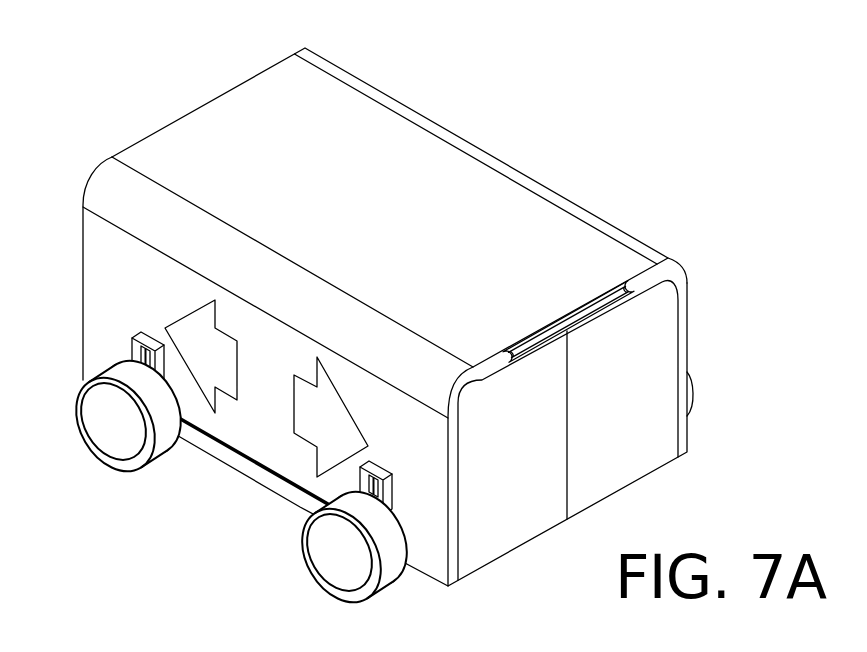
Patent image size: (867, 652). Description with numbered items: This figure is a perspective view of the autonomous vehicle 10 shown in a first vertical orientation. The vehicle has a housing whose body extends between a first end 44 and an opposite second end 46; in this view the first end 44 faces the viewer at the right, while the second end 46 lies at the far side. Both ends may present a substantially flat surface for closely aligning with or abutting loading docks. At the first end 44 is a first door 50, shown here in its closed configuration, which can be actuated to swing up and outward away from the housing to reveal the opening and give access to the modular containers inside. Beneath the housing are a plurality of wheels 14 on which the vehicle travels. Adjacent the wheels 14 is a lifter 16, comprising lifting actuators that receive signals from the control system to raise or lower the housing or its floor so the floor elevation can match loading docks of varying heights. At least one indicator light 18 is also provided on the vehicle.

The autonomous vehicle 10 is at (86, 83).
The wheels 14 is at (83, 428).
The lifter 16 is at (147, 337).
The indicator light 18 is at (222, 331).
The first end 44 is at (688, 317).
The second end 46 is at (200, 103).
The first door 50 is at (502, 523).